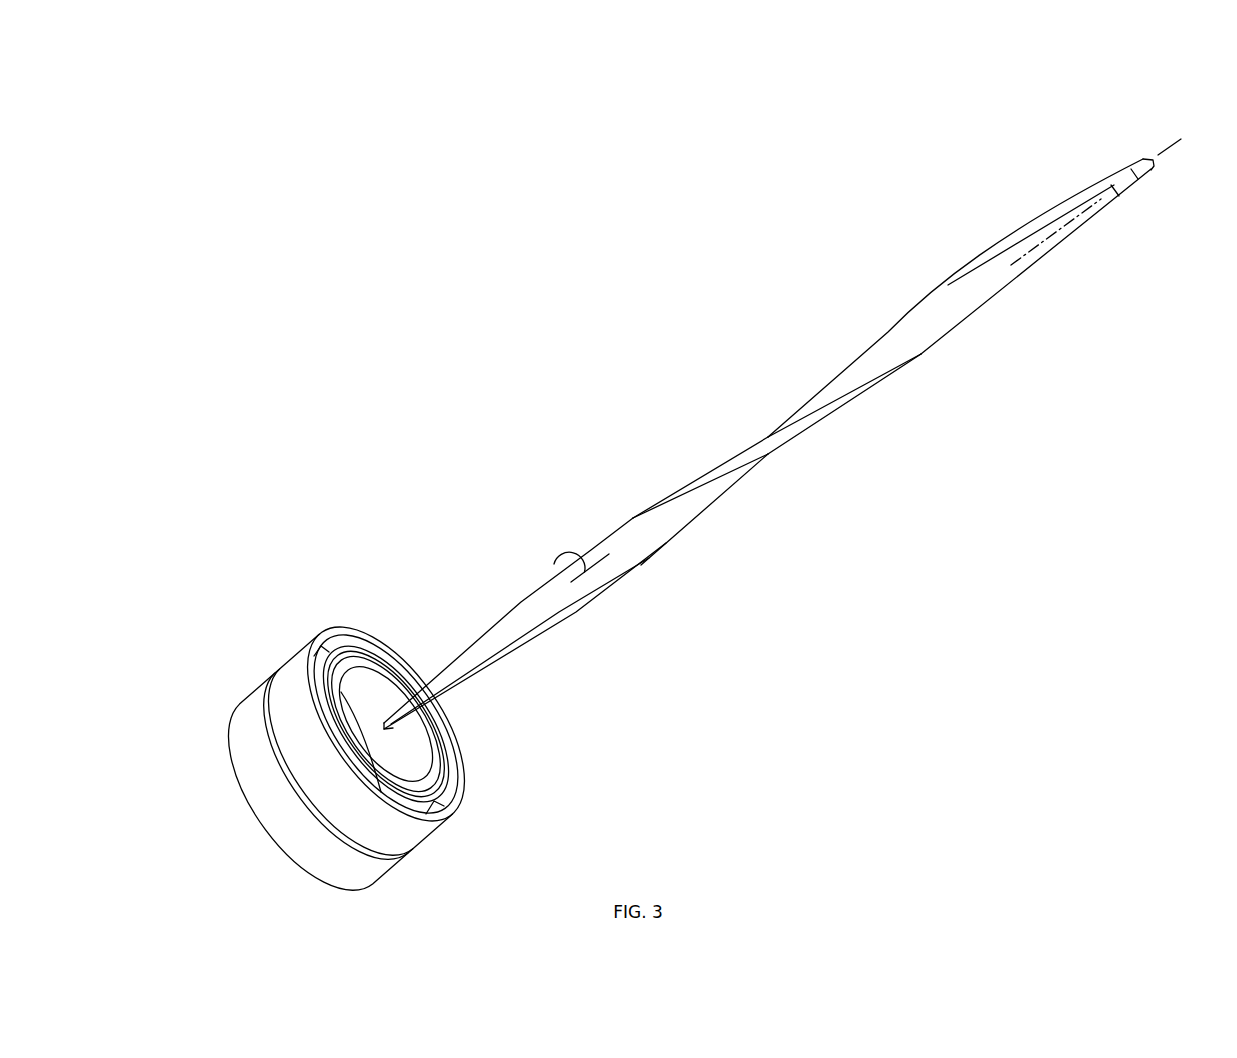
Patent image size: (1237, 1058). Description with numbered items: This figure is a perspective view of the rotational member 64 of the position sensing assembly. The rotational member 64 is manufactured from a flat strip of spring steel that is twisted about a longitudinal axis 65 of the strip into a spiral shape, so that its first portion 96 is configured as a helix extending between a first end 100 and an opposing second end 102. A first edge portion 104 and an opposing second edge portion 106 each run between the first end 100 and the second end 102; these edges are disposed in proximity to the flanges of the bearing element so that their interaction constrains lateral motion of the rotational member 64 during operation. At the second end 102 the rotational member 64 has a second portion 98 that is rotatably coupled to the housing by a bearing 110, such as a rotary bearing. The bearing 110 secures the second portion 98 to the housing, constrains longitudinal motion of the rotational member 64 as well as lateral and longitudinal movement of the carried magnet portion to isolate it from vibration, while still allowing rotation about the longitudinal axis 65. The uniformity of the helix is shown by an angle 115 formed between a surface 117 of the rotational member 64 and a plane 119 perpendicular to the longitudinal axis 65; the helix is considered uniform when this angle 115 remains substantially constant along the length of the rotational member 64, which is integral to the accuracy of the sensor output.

The first end 100 is at (1086, 136).
The rotational member 64 is at (868, 222).
The longitudinal axis 65 is at (1016, 246).
The first portion 96 is at (984, 379).
The first edge portion 104 is at (826, 402).
The surface 117 is at (635, 526).
The angle 115 is at (561, 539).
The plane 119 is at (563, 574).
The second end 102 is at (371, 614).
The bearing 110 is at (236, 641).
The second edge portion 106 is at (521, 637).
The second portion 98 is at (392, 746).